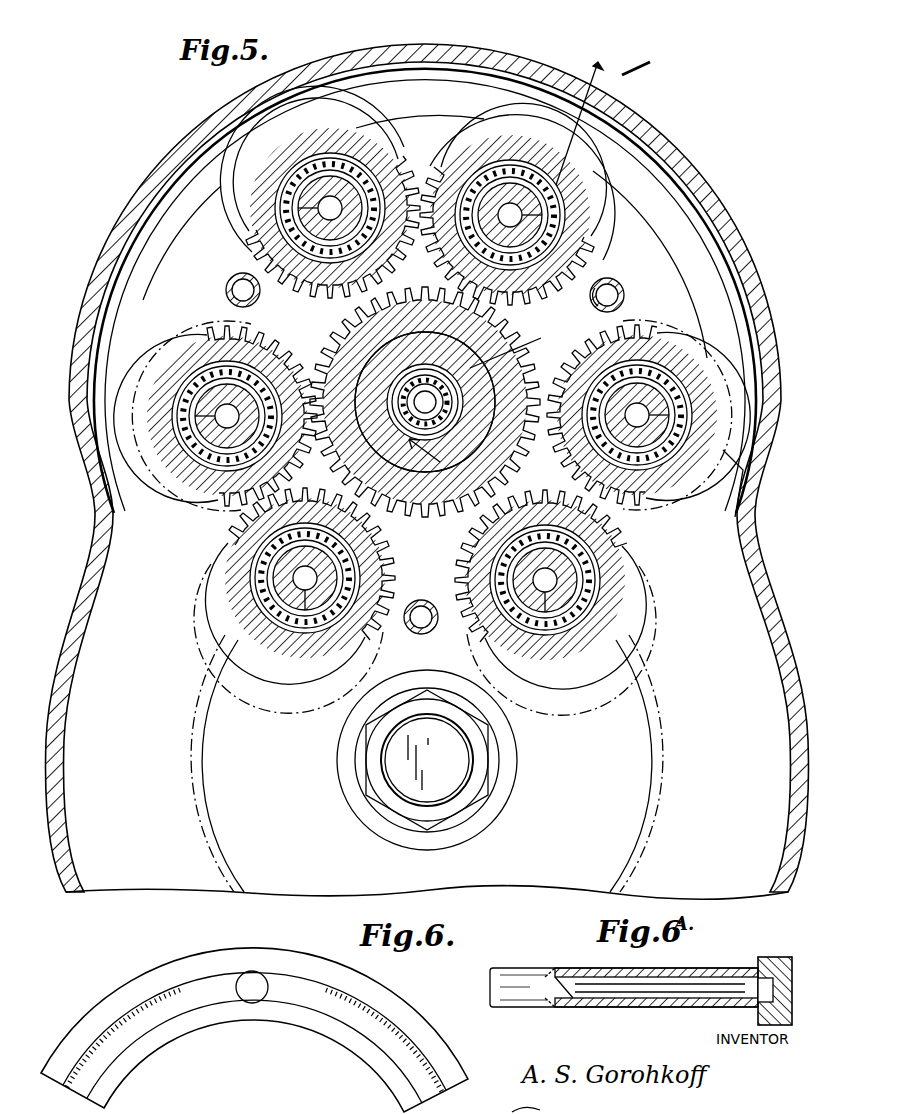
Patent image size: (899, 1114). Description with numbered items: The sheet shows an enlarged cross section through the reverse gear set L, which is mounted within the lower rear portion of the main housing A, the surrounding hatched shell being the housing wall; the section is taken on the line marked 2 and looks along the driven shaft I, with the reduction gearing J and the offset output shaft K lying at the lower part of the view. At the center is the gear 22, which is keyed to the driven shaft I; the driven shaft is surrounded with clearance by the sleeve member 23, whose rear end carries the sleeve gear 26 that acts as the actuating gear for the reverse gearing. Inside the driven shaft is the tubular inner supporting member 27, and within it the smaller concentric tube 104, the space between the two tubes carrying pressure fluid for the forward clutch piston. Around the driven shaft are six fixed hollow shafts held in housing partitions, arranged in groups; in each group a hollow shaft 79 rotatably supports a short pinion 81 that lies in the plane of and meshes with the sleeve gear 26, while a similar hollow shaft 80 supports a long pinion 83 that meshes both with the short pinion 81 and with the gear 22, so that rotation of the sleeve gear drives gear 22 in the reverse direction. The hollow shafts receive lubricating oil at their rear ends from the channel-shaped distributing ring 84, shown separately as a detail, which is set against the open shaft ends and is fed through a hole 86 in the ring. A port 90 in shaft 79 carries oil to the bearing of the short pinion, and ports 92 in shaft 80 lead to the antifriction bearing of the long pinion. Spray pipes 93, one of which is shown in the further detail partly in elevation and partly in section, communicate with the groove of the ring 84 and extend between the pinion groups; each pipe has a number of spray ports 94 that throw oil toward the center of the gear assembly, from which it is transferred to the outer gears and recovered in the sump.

In FIG. 5, the section line 2- 2 is at (529, 253).
In FIG. 5, the main housing A is at (681, 170).
In FIG. 5, the reverse gear set L is at (701, 346).
In FIG. 5, the reduction gearing J is at (652, 718).
In FIG. 5, the offset output shaft K is at (462, 774).
In FIG. 5, the driven shaft I is at (509, 343).
In FIG. 5, the gear 22 is at (430, 424).
In FIG. 5, the sleeve member 23 is at (420, 510).
In FIG. 5, the sleeve gear 26 is at (545, 358).
In FIG. 5, the inner supporting member 27 is at (455, 402).
In FIG. 5, the concentric tube 104 is at (425, 391).
In FIG. 5, the fixed hollow shaft 79 is at (535, 214).
In FIG. 5, the fixed hollow shaft 80 is at (300, 200).
In FIG. 5, the short pinion 81 is at (445, 166).
In FIG. 5, the long pinion 83 is at (393, 166).
In FIG. 5, the distributing ring 84 is at (212, 284).
In FIG. 6, the distributing ring 84 is at (112, 1001).
In FIG. 6A, the distributing ring 84 is at (777, 960).
In FIG. 6, the hole 86 is at (258, 1000).
In FIG. 5, the port 90 is at (513, 200).
In FIG. 5, the ports 92 is at (331, 183).
In FIG. 5, the spray pipe 93 is at (621, 290).
In FIG. 6A, the spray pipe 93 is at (520, 980).
In FIG. 5, the spray ports 94 is at (598, 299).
In FIG. 6A, the spray ports 94 is at (576, 972).